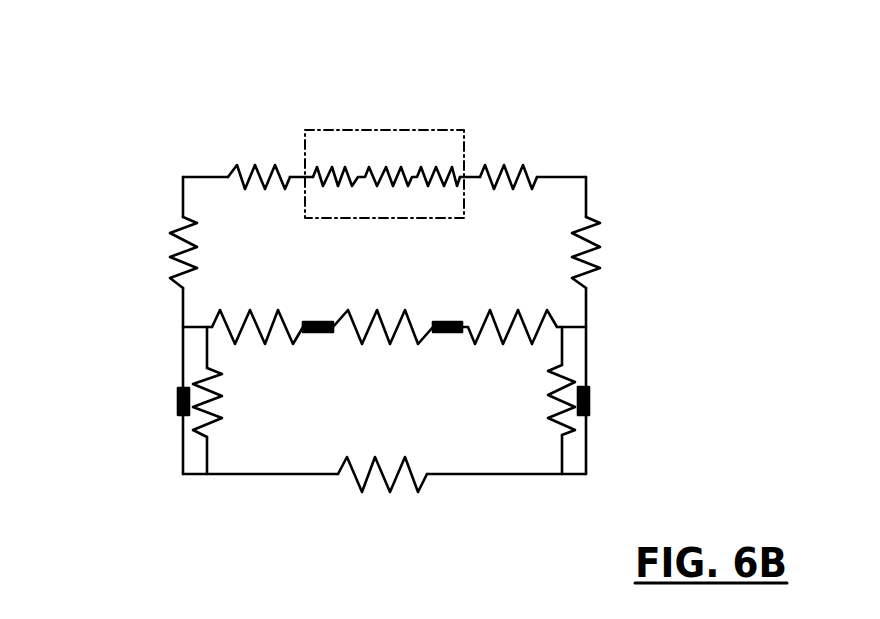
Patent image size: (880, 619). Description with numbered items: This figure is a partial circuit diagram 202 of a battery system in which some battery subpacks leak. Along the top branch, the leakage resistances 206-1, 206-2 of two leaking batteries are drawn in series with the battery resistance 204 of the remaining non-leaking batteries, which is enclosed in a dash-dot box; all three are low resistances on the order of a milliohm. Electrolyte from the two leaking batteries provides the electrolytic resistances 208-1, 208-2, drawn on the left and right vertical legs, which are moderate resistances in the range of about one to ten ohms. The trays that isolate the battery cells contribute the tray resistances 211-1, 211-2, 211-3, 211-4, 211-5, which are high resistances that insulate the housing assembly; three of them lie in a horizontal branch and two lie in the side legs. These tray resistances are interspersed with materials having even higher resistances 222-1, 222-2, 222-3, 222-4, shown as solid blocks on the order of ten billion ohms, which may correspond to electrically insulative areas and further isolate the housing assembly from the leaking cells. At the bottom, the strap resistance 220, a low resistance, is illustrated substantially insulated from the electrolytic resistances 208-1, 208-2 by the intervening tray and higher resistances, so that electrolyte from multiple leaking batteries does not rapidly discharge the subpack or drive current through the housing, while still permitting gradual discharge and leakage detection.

The circuit diagram 202 is at (690, 103).
The battery resistance 204 is at (408, 130).
The leakage resistance 206-1 is at (268, 166).
The leakage resistance 206-2 is at (528, 166).
The electrolytic resistance 208-1 is at (193, 248).
The electrolytic resistance 208-2 is at (600, 234).
The tray resistance 211-1 is at (208, 423).
The tray resistance 211-2 is at (259, 345).
The tray resistance 211-3 is at (390, 340).
The tray resistance 211-4 is at (503, 345).
The tray resistance 211-5 is at (555, 421).
The strap resistance 220 is at (373, 490).
The higher resistance 222-1 is at (178, 400).
The higher resistance 222-2 is at (316, 322).
The higher resistance 222-3 is at (446, 322).
The higher resistance 222-4 is at (590, 396).